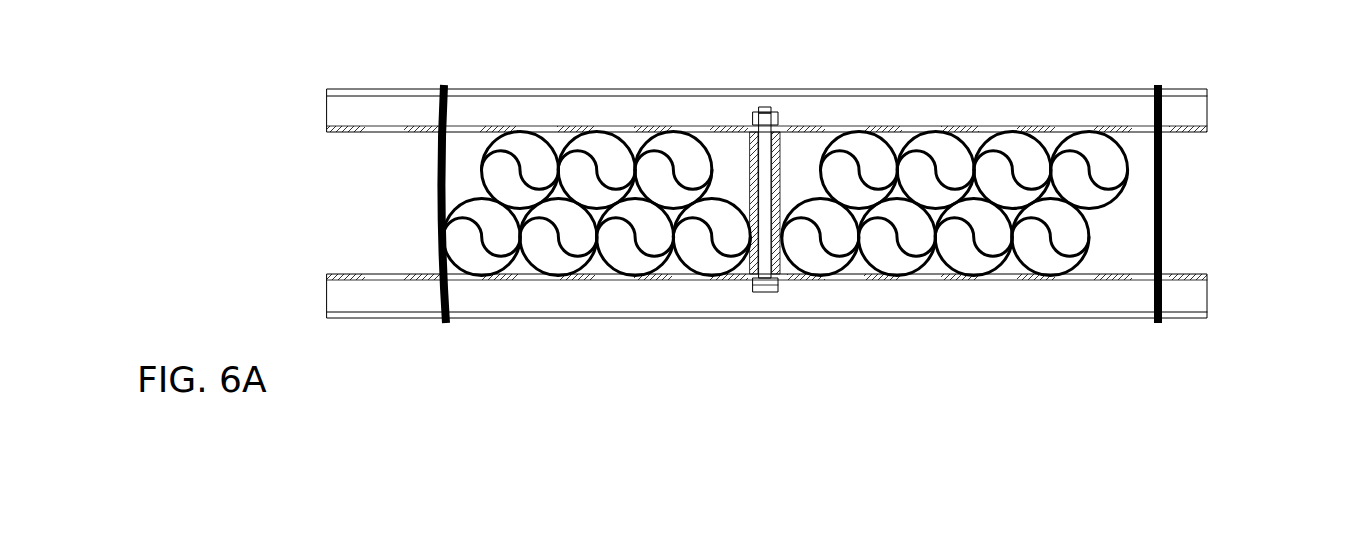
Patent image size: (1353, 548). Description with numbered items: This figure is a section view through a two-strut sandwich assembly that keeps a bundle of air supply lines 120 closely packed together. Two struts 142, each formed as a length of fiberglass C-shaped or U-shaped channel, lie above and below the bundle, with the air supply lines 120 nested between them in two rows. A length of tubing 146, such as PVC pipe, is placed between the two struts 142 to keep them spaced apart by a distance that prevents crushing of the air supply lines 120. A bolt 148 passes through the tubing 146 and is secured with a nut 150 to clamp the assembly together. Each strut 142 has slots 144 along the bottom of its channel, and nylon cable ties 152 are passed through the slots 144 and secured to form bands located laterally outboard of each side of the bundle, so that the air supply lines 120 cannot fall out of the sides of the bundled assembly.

The air supply line 120 is at (1072, 152).
The strut 142 is at (1185, 113).
The slot 144 is at (377, 133).
The tubing 146 is at (753, 160).
The bolt 148 is at (763, 147).
The nut 150 is at (775, 112).
The nylon cable tie 152 is at (438, 188).